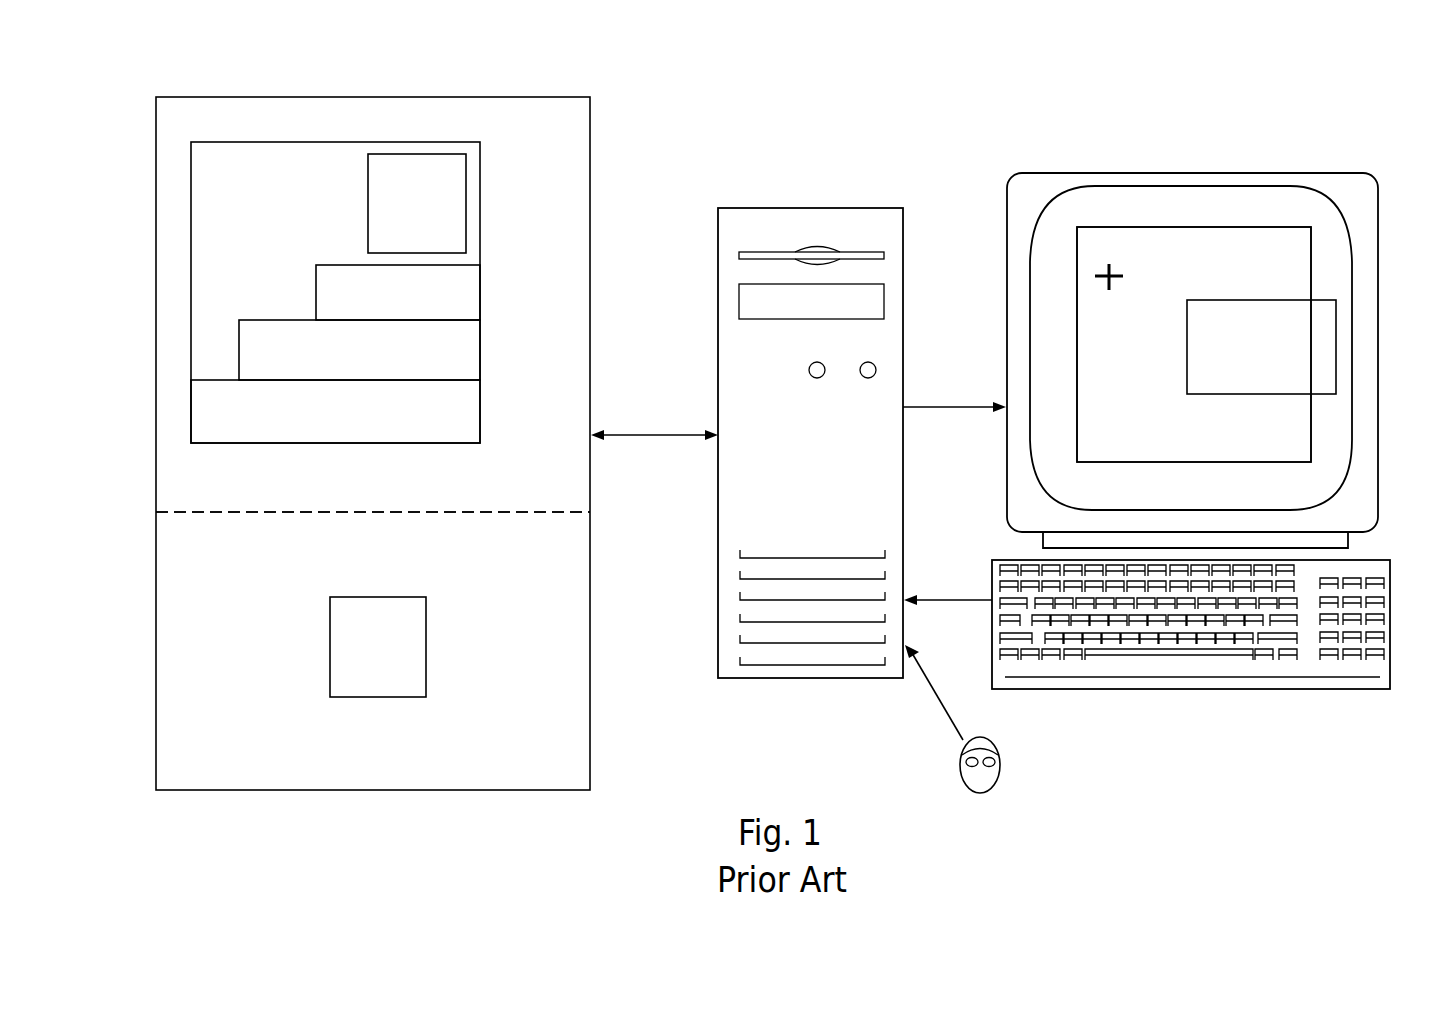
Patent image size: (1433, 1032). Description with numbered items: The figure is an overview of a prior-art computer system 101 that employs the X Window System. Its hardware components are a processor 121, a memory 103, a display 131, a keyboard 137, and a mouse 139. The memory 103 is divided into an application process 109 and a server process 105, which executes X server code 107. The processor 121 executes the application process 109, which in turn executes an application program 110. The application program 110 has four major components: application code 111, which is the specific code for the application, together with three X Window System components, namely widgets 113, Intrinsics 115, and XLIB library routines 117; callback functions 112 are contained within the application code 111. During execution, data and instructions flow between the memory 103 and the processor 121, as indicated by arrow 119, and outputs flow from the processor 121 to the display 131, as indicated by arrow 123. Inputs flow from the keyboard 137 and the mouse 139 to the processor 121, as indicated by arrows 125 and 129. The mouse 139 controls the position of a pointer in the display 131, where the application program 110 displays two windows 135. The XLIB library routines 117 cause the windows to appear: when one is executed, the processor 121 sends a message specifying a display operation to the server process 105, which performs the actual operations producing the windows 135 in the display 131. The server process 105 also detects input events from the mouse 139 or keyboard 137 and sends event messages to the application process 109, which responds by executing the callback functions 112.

The computer system 101 is at (1310, 92).
The memory 103 is at (373, 462).
The server process 105 is at (373, 644).
The X server code 107 is at (408, 597).
The application process 109 is at (373, 498).
The application program 110 is at (480, 235).
The application code 111 is at (305, 245).
The callback functions (CBF) 112 is at (440, 154).
The widgets 113 is at (480, 288).
The Intrinsics 115 is at (480, 355).
The XLIB library routines 117 is at (480, 409).
The arrow 119 is at (647, 437).
The processor 121 is at (852, 208).
The arrow 123 is at (943, 407).
The arrow 125 is at (965, 598).
The arrow 129 is at (938, 707).
The display 131 is at (1308, 173).
The windows 135 is at (1112, 272).
The keyboard 137 is at (1287, 689).
The mouse 139 is at (1000, 768).